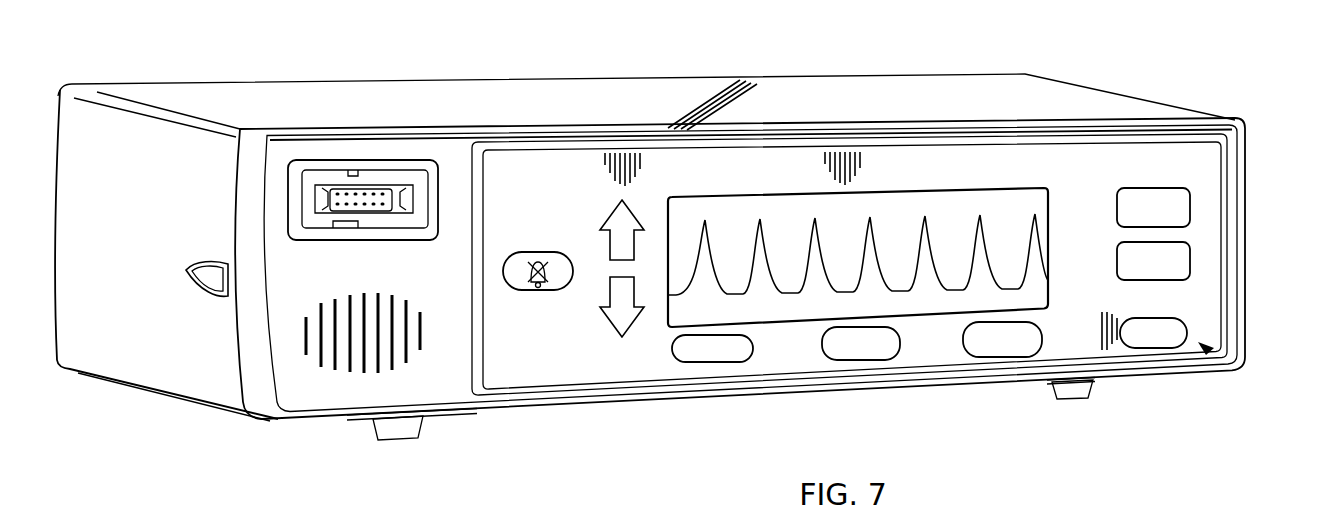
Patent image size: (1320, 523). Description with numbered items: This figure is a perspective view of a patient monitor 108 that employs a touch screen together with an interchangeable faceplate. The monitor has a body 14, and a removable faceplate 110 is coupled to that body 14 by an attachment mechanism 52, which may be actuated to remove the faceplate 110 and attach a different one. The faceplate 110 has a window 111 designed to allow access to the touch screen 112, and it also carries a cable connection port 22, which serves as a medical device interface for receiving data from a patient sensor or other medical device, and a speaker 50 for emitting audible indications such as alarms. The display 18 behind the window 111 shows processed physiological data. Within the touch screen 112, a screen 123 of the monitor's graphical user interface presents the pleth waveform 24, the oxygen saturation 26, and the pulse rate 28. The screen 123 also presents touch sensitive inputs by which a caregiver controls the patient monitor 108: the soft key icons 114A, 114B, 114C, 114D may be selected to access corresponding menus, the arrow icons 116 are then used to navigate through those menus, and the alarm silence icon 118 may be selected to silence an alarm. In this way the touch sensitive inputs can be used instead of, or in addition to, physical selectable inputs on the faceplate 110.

The patient monitor 108 is at (630, 50).
The body 14 is at (102, 348).
The attachment mechanism 52 is at (200, 288).
The faceplate 110 is at (257, 395).
The window 111 is at (548, 392).
The touch screen 112 is at (598, 185).
The cable connection port 22 is at (363, 165).
The speaker 50 is at (350, 370).
The alarm silence icon 118 is at (551, 252).
The arrow icons 116 is at (610, 278).
The display 18 is at (712, 215).
The pleth waveform 24 is at (763, 215).
The oxygen saturation 26 is at (1138, 190).
The pulse rate 28 is at (1123, 250).
The soft key icon 114A is at (728, 365).
The soft key icon 114B is at (858, 362).
The soft key icon 114C is at (985, 358).
The soft key icon 114D is at (1188, 333).
The screen 123 is at (1210, 353).